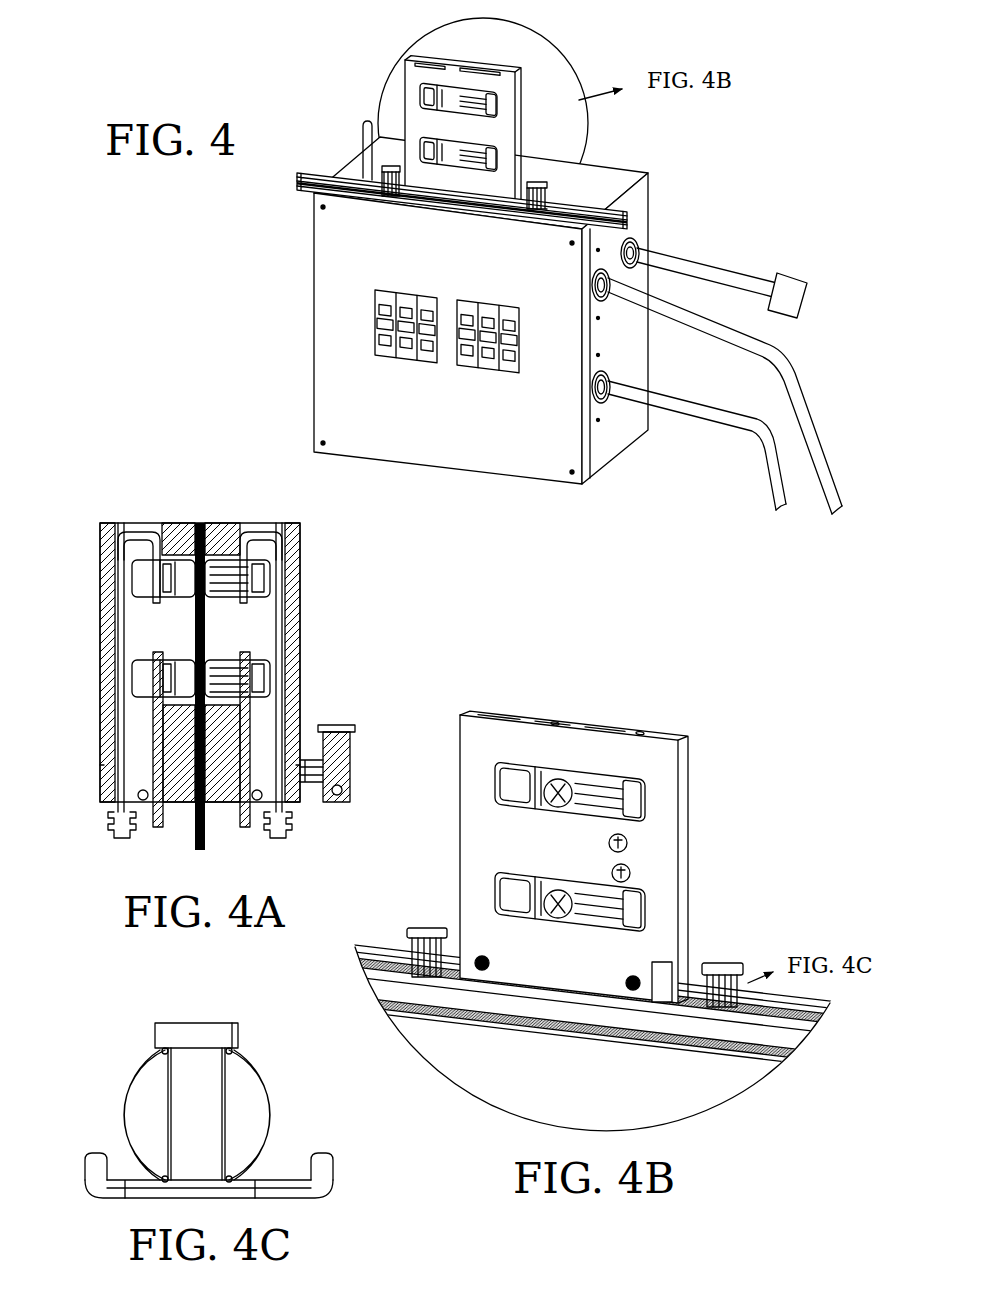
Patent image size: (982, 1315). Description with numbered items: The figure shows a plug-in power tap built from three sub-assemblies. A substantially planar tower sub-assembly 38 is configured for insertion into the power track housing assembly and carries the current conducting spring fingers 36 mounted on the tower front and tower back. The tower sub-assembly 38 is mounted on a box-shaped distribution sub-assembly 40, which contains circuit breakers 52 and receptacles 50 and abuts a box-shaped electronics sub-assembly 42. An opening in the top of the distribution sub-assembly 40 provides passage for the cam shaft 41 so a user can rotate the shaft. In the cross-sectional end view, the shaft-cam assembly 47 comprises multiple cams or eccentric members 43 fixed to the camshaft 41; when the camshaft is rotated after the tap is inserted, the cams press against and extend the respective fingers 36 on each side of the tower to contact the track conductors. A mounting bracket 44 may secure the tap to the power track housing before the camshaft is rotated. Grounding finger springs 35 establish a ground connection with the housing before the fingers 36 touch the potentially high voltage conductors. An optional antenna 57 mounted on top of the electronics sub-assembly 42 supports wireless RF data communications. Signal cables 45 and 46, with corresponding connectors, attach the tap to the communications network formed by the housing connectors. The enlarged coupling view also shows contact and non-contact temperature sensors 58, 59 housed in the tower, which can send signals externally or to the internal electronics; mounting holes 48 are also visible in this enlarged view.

In FIG. 4, the grounding finger springs 35 is at (387, 165).
In FIG. 4B, the grounding finger springs 35 is at (730, 964).
In FIG. 4C, the grounding finger springs 35 is at (110, 1082).
In FIG. 4, the spring fingers 36 is at (480, 143).
In FIG. 4A, the spring fingers 36 is at (238, 662).
In FIG. 4B, the spring fingers 36 is at (642, 908).
In FIG. 4, the tower sub-assembly 38 is at (455, 112).
In FIG. 4B, the tower sub-assembly 38 is at (631, 760).
In FIG. 4, the distribution sub-assembly 40 is at (586, 335).
In FIG. 4A, the cam shaft 41 is at (195, 843).
In FIG. 4, the electronics sub-assembly 42 is at (641, 198).
In FIG. 4, the cams 43 is at (430, 440).
In FIG. 4A, the cams 43 is at (180, 662).
In FIG. 4, the mounting bracket 44 is at (296, 178).
In FIG. 4, the signal cable 45 is at (710, 273).
In FIG. 4, the signal cable 46 is at (790, 287).
In FIG. 4A, the shaft-cam assembly 47 is at (88, 696).
In FIG. 4B, the mounting holes 48 is at (635, 990).
In FIG. 4, the receptacles 50 is at (777, 465).
In FIG. 4, the circuit breakers 52 is at (375, 323).
In FIG. 4, the antenna 57 is at (363, 160).
In FIG. 4B, the temperature sensor 58 is at (553, 890).
In FIG. 4B, the temperature sensor 59 is at (631, 872).